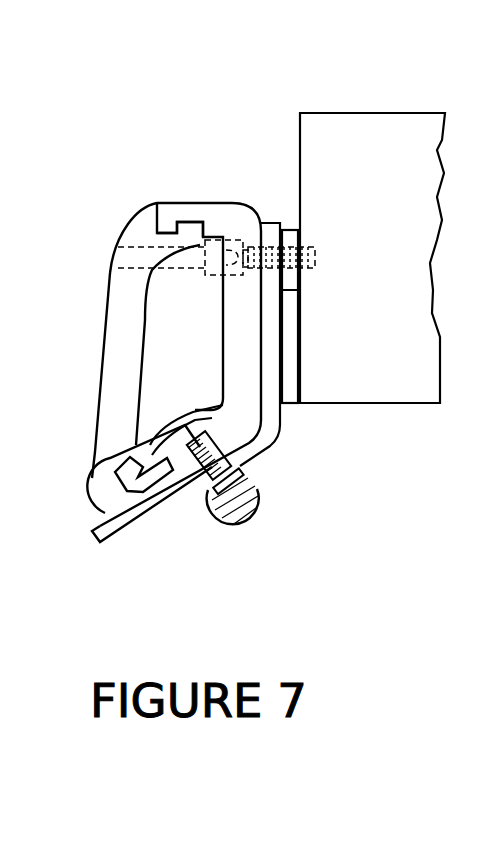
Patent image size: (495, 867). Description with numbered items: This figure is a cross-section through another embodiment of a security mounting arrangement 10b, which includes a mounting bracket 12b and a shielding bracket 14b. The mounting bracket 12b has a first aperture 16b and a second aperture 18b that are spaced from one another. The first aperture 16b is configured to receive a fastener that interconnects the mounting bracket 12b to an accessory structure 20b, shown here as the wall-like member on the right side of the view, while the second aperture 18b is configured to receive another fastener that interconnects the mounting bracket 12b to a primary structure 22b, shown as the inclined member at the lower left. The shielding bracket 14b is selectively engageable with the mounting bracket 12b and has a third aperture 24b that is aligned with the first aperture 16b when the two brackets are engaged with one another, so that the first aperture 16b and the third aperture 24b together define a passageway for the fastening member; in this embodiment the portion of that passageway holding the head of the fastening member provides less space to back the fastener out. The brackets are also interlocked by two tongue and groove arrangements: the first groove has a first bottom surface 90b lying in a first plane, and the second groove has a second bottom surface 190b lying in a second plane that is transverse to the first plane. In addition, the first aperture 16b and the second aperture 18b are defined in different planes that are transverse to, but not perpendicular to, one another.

The security mounting arrangement 10b is at (168, 122).
The mounting bracket 12b is at (233, 413).
The shielding bracket 14b is at (130, 323).
The first aperture 16b is at (300, 255).
The second aperture 18b is at (150, 422).
The accessory structure 20b is at (403, 252).
The primary structure 22b is at (166, 500).
The third aperture 24b is at (200, 245).
The first bottom surface 90b is at (157, 236).
The second bottom surface 190b is at (92, 477).